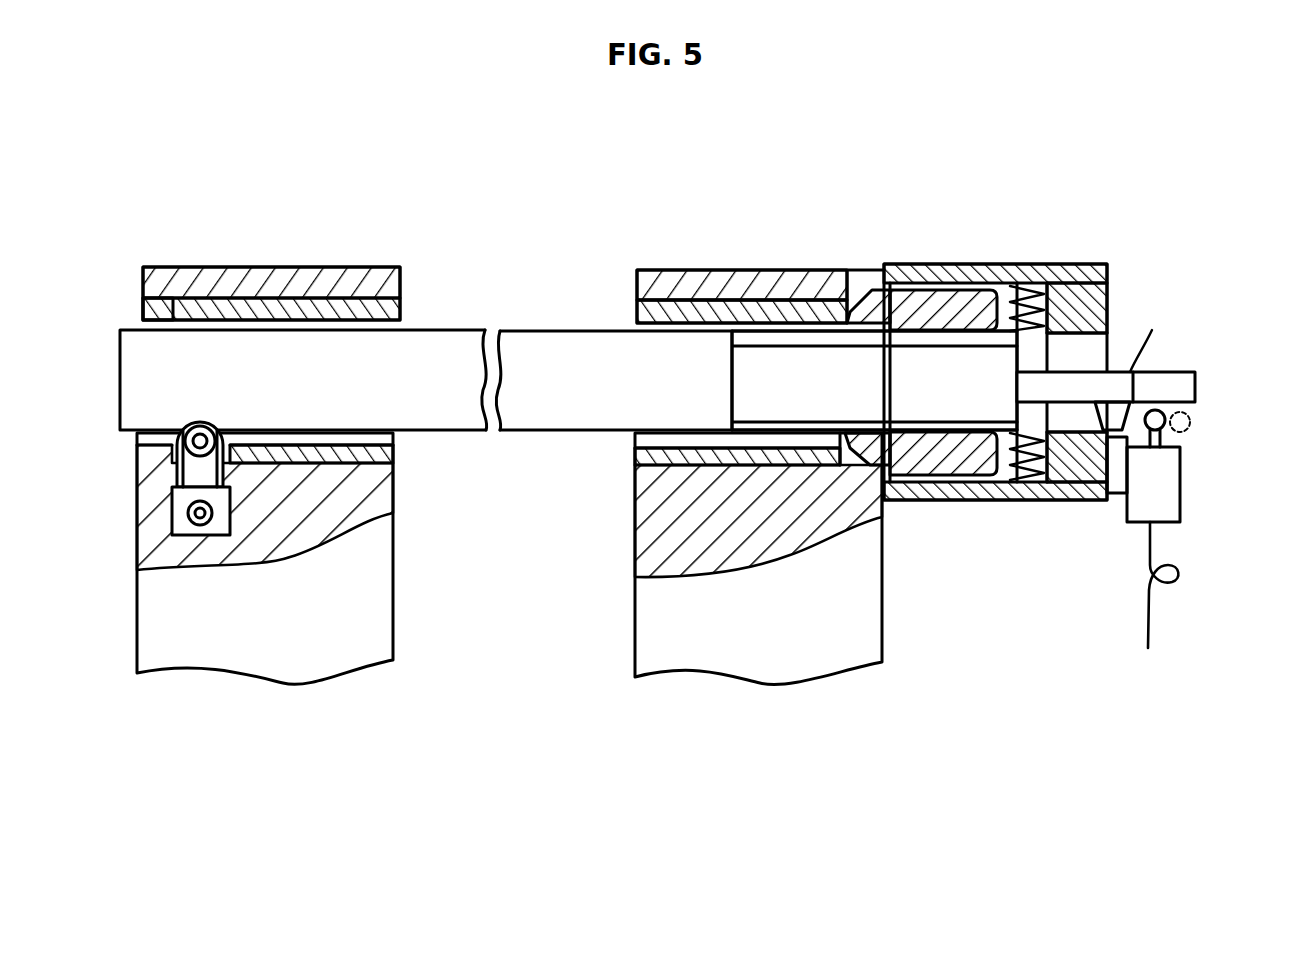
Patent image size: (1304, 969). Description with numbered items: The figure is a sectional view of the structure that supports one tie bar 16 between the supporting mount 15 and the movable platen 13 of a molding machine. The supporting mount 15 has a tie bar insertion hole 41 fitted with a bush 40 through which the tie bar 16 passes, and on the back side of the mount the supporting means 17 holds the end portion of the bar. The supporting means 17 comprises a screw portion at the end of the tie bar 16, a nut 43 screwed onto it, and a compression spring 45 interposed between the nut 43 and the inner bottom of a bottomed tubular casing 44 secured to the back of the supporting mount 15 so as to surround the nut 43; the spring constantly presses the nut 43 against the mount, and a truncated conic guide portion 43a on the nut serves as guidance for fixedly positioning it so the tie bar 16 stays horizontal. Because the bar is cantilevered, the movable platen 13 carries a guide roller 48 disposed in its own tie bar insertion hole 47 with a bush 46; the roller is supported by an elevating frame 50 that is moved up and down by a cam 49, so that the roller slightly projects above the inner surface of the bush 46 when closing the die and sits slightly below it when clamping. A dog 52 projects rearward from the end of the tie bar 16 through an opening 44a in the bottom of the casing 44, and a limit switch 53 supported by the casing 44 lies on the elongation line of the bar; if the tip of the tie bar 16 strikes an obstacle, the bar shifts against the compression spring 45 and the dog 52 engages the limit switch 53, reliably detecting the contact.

The movable platen 13 is at (212, 228).
The supporting mount 15 is at (757, 242).
The tie bar 16 is at (550, 360).
The supporting means 17 is at (1024, 390).
The bush 40 is at (635, 452).
The tie bar insertion hole 41 is at (758, 268).
The nut 43 is at (940, 290).
The guide portion 43a is at (860, 295).
The casing 44 is at (940, 500).
The opening 44a is at (1068, 268).
The compression spring 45 is at (1015, 500).
The bush 46 is at (153, 307).
The tie bar insertion hole 47 is at (283, 300).
The guide roller 48 is at (184, 425).
The cam 49 is at (158, 540).
The elevating frame 50 is at (215, 558).
The dog 52 is at (1175, 372).
The limit switch 53 is at (1160, 482).